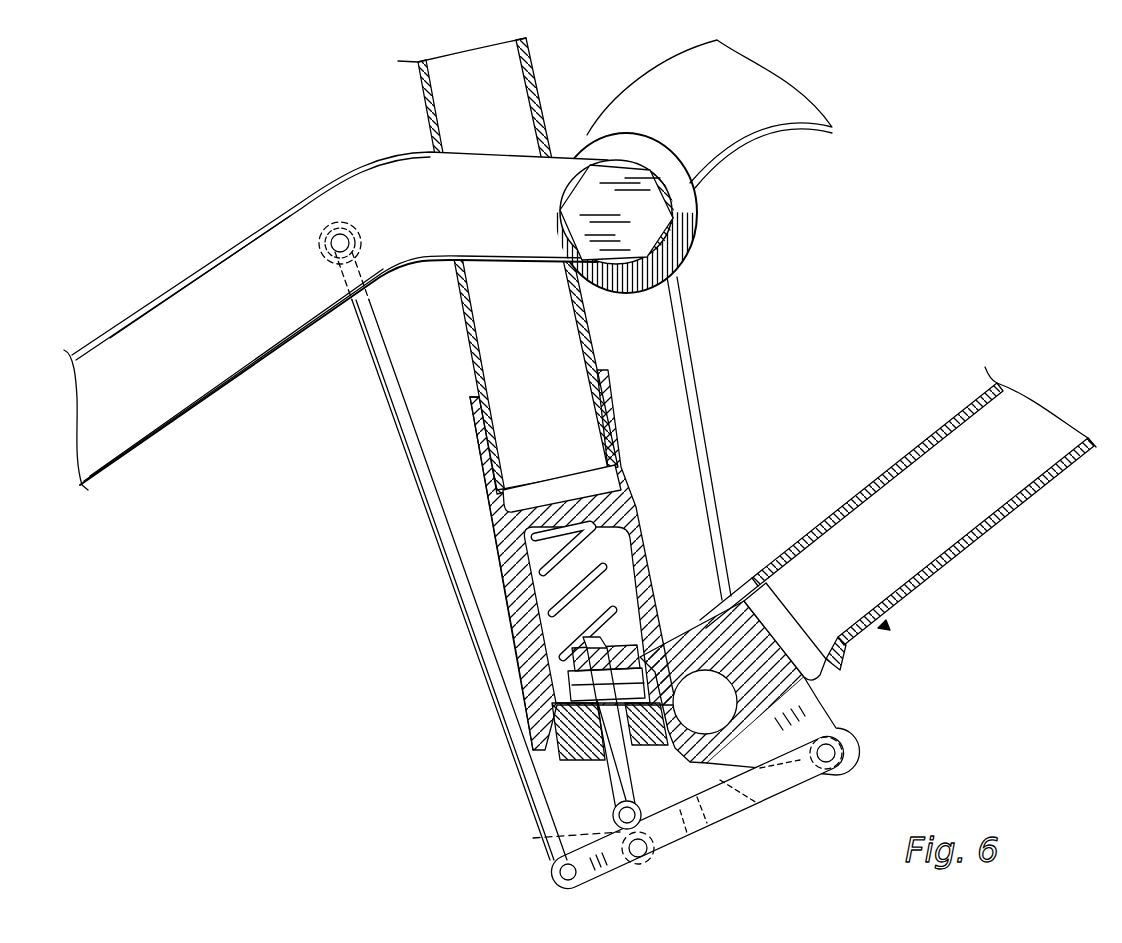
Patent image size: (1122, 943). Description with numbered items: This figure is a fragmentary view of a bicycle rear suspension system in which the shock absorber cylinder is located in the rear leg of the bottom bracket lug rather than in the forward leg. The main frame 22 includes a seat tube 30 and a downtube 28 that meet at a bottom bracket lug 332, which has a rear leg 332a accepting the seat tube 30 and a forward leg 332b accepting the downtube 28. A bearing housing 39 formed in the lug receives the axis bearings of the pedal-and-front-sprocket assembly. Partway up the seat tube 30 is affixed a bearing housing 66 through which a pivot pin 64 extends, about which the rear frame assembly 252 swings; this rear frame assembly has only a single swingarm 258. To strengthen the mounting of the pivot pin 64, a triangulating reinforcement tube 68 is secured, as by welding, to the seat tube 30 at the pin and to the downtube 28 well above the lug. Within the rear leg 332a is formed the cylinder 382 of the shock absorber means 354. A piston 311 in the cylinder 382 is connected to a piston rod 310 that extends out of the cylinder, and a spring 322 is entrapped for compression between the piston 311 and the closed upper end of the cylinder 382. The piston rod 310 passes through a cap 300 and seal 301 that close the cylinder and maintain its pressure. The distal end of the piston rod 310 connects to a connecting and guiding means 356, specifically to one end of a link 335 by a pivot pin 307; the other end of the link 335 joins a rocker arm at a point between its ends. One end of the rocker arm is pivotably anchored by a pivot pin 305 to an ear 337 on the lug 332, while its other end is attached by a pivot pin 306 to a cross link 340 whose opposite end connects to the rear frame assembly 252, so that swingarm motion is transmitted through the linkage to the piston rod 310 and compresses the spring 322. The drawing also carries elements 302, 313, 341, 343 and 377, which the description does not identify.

The main frame 22 is at (550, 84).
The downtube 28 is at (962, 410).
The seat tube 30 is at (423, 134).
The bearing housing 39 is at (702, 670).
The pivot pin 64 is at (645, 220).
The bearing housing 66 is at (672, 192).
The triangulating reinforcement tube 68 is at (740, 86).
The rear frame assembly 252 is at (310, 190).
The single swingarm 258 is at (243, 258).
The cap 300 is at (560, 723).
The seal 301 is at (560, 745).
The pivot pin 302 is at (613, 814).
The pivot pin 305 is at (843, 753).
The pivot pin 306 is at (560, 875).
The pivot pin 307 is at (655, 852).
The piston rod 310 is at (615, 765).
The piston 311 is at (560, 697).
The nut 313 is at (547, 665).
The spring 322 is at (530, 572).
The bottom bracket lug 332 is at (793, 697).
The rear leg 332a is at (468, 400).
The forward leg 332b is at (883, 625).
The link 335 is at (533, 839).
The ear 337 is at (785, 716).
The cross link 340 is at (395, 432).
The plug 341 is at (515, 497).
The wedge block 343 is at (825, 677).
The shock absorber means 354 is at (627, 782).
The connecting and guiding means 356 is at (803, 795).
The link 377 is at (753, 802).
The cylinder 382 is at (642, 538).